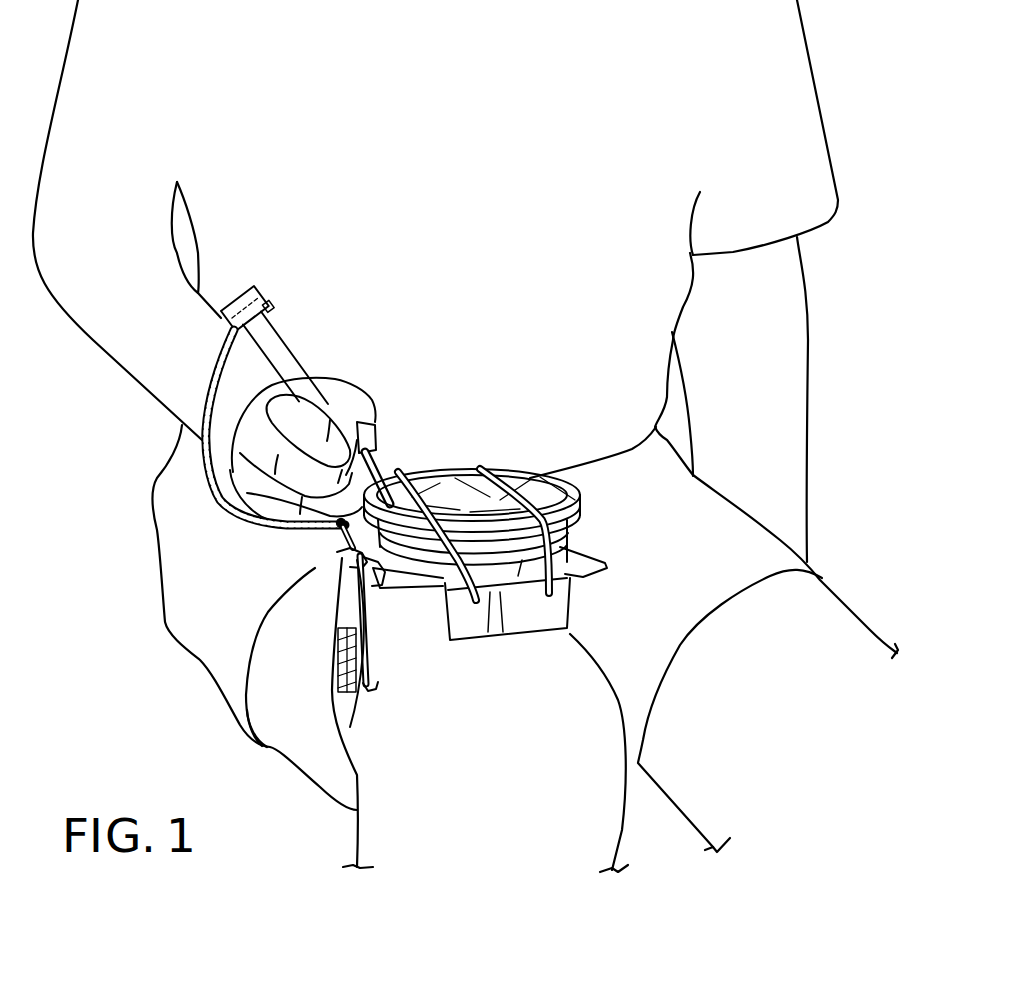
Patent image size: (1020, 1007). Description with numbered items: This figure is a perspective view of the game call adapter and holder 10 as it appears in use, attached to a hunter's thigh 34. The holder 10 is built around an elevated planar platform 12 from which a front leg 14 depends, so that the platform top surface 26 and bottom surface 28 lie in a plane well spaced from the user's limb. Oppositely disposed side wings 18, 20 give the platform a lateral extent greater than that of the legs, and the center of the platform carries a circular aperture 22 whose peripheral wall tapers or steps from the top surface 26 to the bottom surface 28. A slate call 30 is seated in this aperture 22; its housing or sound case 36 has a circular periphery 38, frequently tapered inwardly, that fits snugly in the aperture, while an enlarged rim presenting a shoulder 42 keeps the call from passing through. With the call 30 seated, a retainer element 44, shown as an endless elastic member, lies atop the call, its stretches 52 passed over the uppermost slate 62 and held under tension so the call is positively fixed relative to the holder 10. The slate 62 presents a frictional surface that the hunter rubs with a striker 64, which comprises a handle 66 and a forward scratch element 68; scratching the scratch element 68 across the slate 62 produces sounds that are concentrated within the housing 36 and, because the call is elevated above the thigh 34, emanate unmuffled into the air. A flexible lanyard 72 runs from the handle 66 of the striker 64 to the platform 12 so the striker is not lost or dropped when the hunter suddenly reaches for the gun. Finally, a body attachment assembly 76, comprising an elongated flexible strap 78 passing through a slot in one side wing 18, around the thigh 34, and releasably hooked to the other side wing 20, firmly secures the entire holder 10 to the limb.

The holder 10 is at (504, 566).
The planar platform 12 is at (606, 559).
The front leg 14 is at (525, 617).
The side wing 18 is at (378, 587).
The side wing 20 is at (578, 534).
The aperture 22 is at (417, 560).
The platform top surface 26 is at (518, 576).
The platform bottom surface 28 is at (363, 655).
The slate call 30 is at (494, 479).
The thigh 34 is at (473, 670).
The call housing 36 is at (575, 512).
The circular periphery 38 is at (373, 563).
The shoulder 42 is at (350, 546).
The retainer element 44 is at (487, 470).
The retainer element stretches 52 is at (455, 490).
The slate 62 is at (548, 471).
The striker 64 is at (327, 395).
The handle 66 is at (270, 330).
The scratch element 68 is at (367, 475).
The lanyard 72 is at (213, 368).
The body attachment assembly 76 is at (317, 644).
The strap 78 is at (340, 670).